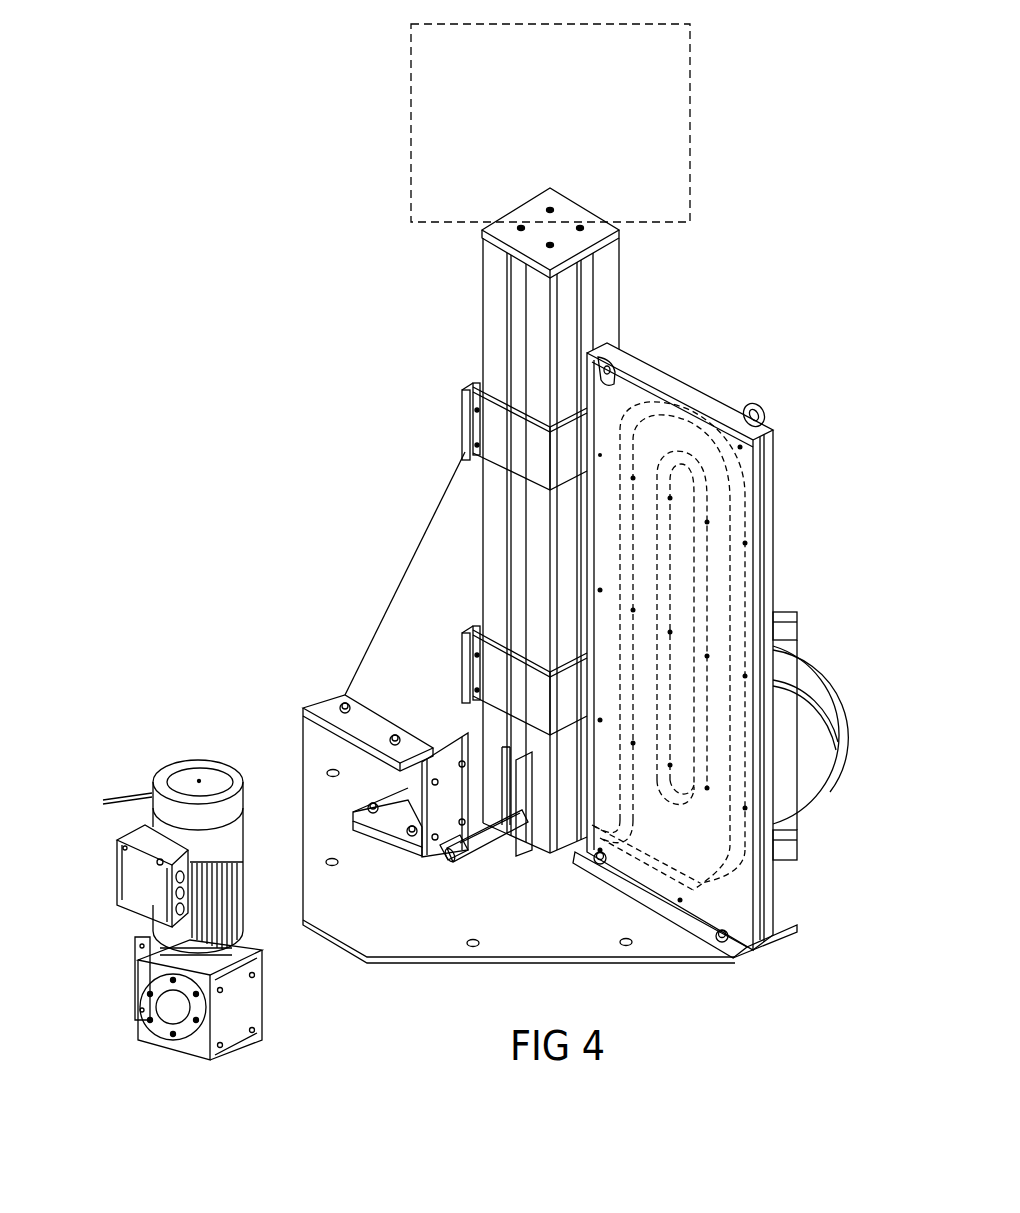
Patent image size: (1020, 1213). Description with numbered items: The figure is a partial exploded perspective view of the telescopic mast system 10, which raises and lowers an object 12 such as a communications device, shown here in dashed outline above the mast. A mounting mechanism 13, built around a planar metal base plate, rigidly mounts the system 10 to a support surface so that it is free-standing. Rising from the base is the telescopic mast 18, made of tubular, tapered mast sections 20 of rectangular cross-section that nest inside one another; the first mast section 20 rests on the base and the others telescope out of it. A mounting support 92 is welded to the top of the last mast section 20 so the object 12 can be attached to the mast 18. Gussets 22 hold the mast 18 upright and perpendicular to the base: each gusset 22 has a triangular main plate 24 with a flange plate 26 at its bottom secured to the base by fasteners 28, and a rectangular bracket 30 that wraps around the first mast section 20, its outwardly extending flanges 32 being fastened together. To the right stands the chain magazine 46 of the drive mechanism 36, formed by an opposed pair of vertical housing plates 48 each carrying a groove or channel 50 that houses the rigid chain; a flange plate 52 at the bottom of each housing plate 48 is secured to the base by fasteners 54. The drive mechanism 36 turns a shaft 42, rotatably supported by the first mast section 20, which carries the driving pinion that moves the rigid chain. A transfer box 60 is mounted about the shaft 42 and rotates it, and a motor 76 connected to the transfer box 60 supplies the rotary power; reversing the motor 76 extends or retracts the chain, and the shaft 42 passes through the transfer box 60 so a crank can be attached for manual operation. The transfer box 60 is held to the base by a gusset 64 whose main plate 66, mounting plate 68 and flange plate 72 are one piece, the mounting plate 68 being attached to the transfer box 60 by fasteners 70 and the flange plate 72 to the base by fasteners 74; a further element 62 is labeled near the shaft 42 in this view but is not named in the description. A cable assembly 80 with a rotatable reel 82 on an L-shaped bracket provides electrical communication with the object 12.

The telescopic mast system 10 is at (752, 298).
The object 12 is at (693, 111).
The mounting mechanism 13 is at (421, 966).
The telescopic mast 18 is at (483, 283).
The telescopic mast sections 20 is at (570, 513).
The gussets 22 is at (405, 573).
The main plate 24 is at (438, 498).
The flange plate 26 is at (341, 715).
The fasteners 28 is at (341, 701).
The bracket 30 is at (492, 559).
The flanges 32 is at (463, 391).
The drive mechanism 36 is at (154, 826).
The shaft 42 is at (490, 835).
The chain magazine 46 is at (716, 398).
The housing plates 48 is at (748, 500).
The groove or channel 50 is at (708, 578).
The flange plate 52 is at (735, 938).
The fasteners 54 is at (705, 930).
The transfer box 60 is at (231, 1030).
The mounting plate 62 is at (508, 820).
The gusset 64 is at (437, 784).
The main plate 66 is at (346, 822).
The mounting plate 68 is at (444, 826).
The fasteners 70 is at (365, 790).
The flange plate 72 is at (408, 803).
The fasteners 74 is at (368, 808).
The motor 76 is at (153, 807).
The cable assembly 80 is at (813, 650).
The rotatable reel 82 is at (822, 756).
The mounting support 92 is at (588, 224).